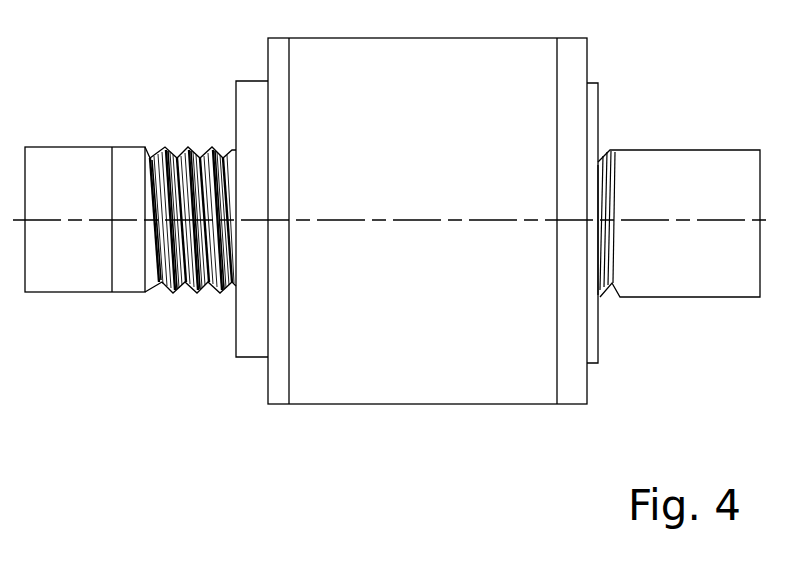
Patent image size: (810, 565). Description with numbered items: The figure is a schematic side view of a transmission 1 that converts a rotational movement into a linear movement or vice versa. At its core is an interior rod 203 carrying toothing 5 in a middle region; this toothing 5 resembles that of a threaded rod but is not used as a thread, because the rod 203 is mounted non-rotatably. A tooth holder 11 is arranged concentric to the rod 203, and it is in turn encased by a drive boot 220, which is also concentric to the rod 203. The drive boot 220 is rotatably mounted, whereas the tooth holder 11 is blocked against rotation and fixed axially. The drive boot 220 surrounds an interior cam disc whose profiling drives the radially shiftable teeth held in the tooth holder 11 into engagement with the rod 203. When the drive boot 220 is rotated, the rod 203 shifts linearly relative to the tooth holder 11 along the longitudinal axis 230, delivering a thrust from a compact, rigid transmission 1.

The transmission 1 is at (655, 357).
The toothing 5 is at (197, 293).
The tooth holder 11 is at (236, 100).
The interior rod 203 is at (57, 147).
The drive boot 220 is at (268, 57).
The longitudinal axis 230 is at (372, 223).